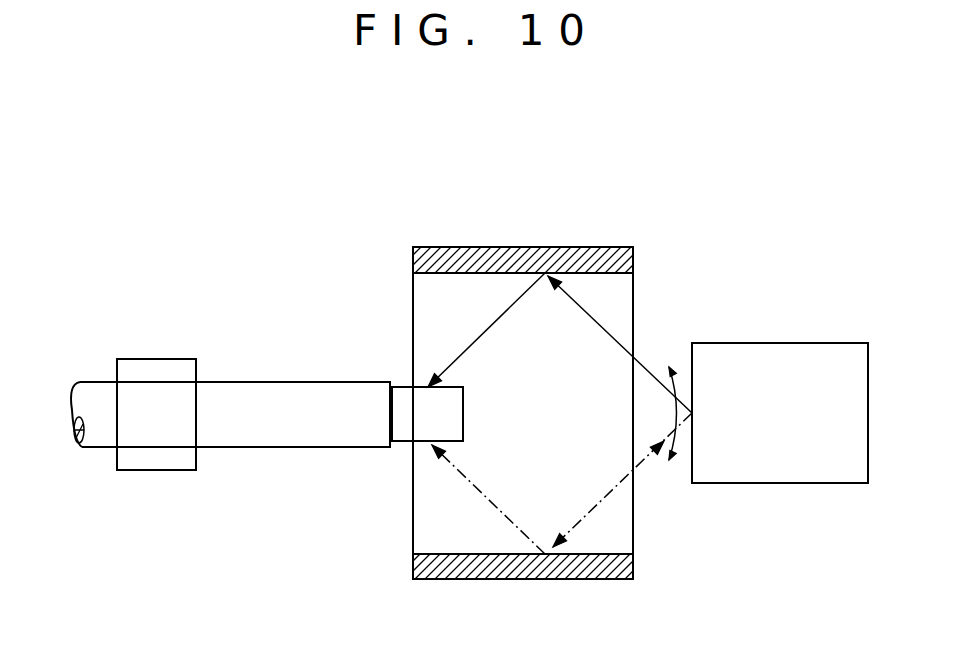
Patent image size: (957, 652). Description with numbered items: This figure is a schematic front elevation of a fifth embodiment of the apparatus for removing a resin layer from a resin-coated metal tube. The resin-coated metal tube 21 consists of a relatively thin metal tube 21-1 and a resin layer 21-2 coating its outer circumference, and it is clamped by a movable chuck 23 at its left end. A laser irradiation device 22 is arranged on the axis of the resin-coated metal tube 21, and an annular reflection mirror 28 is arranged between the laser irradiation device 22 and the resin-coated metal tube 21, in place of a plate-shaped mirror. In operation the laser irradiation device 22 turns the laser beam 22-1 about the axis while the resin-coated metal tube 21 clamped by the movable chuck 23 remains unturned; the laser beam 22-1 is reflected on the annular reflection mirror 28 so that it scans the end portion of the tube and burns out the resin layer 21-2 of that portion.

The resin-coated metal tube 21 is at (230, 397).
The metal tube 21-1 is at (407, 387).
The resin layer 21-2 is at (280, 437).
The laser irradiation device 22 is at (800, 343).
The laser beam 22-1 is at (597, 320).
The chuck 23 is at (158, 359).
The annular reflection mirror 28 is at (555, 247).